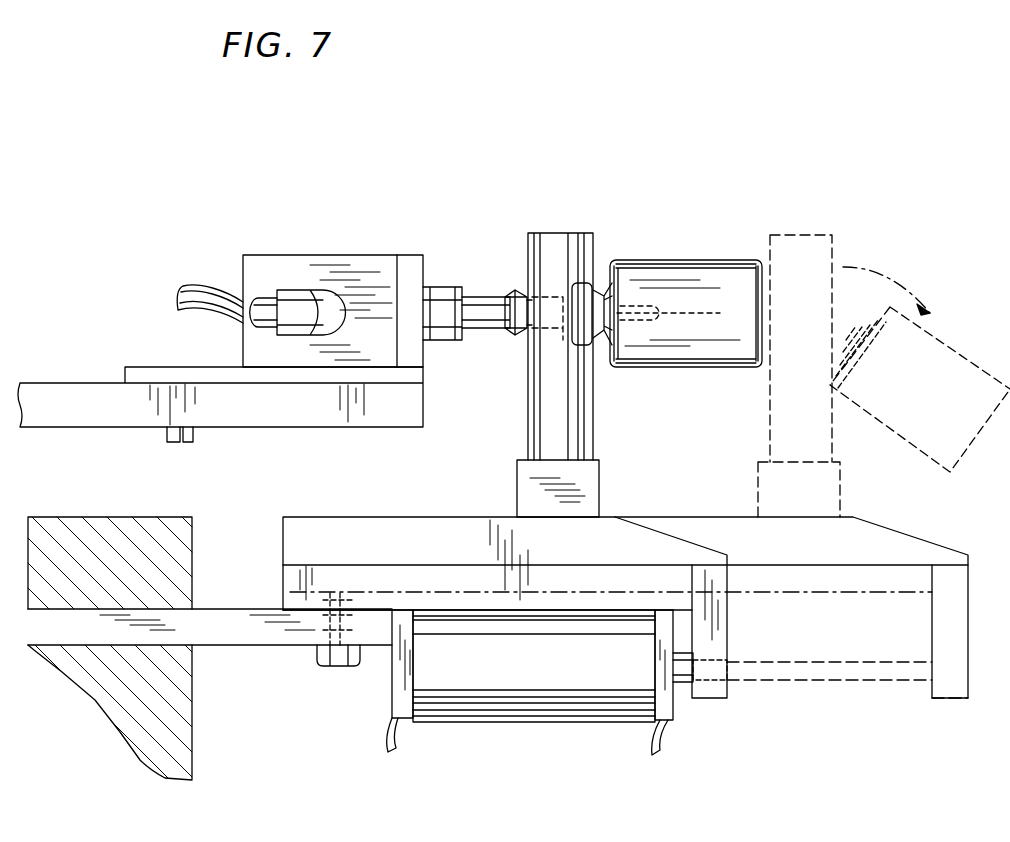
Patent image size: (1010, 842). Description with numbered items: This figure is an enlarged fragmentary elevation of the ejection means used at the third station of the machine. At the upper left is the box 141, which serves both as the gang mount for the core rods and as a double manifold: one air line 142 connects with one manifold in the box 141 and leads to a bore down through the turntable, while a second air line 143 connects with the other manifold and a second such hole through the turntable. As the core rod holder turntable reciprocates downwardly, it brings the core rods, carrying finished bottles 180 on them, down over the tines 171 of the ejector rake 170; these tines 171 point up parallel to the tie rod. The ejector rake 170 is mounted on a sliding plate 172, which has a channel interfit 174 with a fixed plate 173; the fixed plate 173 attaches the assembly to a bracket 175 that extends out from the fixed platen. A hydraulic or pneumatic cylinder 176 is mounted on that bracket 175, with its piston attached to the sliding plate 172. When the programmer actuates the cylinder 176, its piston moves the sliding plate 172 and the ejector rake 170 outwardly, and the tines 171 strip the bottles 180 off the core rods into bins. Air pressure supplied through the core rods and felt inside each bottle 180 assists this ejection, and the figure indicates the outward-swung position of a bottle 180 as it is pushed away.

The box 141 is at (321, 267).
The air line 142 is at (208, 297).
The second air line 143 is at (267, 323).
The ejector rake 170 is at (757, 472).
The tines 171 is at (770, 385).
The sliding plate 172 is at (425, 533).
The fixed plate 173 is at (362, 577).
The channel interfit 174 is at (281, 602).
The bracket 175 is at (243, 633).
The hydraulic or pneumatic cylinder 176 is at (552, 692).
The bottles 180 is at (677, 272).